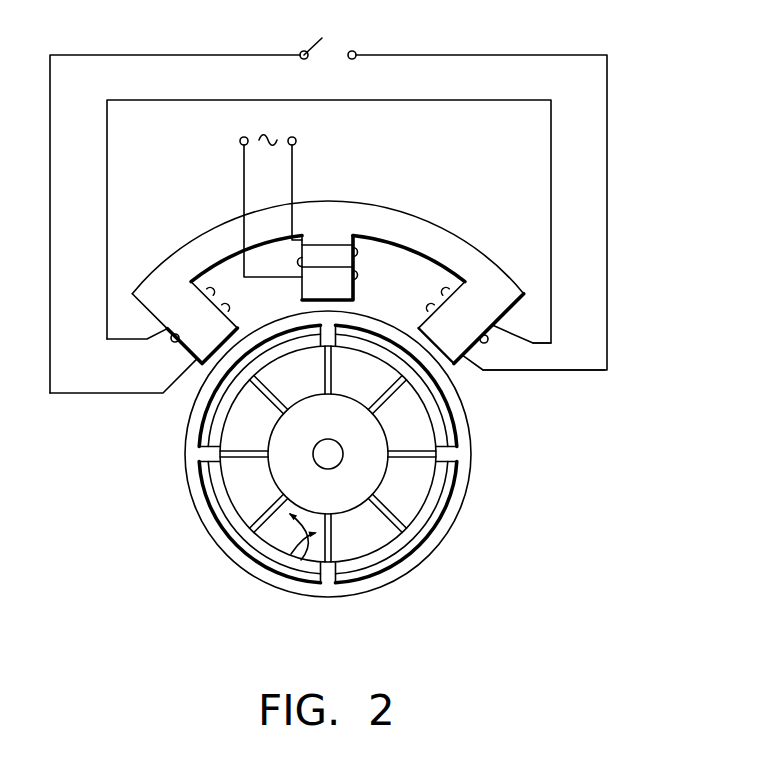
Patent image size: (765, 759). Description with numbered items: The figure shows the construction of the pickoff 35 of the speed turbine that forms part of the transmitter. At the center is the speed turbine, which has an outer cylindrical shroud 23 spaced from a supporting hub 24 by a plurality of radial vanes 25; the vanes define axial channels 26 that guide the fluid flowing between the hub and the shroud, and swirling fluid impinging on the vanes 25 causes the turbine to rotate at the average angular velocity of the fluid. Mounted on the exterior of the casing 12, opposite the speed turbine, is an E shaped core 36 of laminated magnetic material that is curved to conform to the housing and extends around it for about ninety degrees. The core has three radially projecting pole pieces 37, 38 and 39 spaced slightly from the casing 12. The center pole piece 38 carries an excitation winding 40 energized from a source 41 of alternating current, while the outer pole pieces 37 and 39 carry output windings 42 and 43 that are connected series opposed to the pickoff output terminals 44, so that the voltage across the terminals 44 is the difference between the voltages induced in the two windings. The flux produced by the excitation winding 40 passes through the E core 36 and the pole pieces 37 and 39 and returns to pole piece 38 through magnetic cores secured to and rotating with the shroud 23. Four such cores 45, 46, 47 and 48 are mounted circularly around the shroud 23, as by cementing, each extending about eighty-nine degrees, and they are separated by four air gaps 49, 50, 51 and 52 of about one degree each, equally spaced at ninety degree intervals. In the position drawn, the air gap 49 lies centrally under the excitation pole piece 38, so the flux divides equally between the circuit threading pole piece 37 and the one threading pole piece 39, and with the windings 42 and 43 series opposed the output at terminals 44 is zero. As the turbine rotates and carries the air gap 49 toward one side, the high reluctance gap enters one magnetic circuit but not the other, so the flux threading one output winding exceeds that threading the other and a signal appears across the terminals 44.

The casing 12 is at (180, 438).
The outer cylindrical shroud 23 is at (424, 496).
The supporting hub 24 is at (377, 425).
The radial vanes 25 is at (297, 544).
The axial channels 26 is at (285, 528).
The pickoff 35 is at (524, 293).
The E shaped core 36 is at (452, 228).
The pole piece 37 is at (168, 330).
The pole piece 38 is at (356, 291).
The pole piece 39 is at (458, 366).
The excitation winding 40 is at (356, 253).
The source of alternating current 41 is at (286, 137).
The output winding 42 is at (173, 343).
The output winding 43 is at (488, 341).
The pickoff output terminals 44 is at (349, 49).
The core 45 is at (276, 353).
The core 46 is at (379, 354).
The core 47 is at (407, 519).
The core 48 is at (235, 521).
The air gap 49 is at (330, 338).
The air gap 50 is at (443, 455).
The air gap 51 is at (328, 566).
The air gap 52 is at (212, 458).